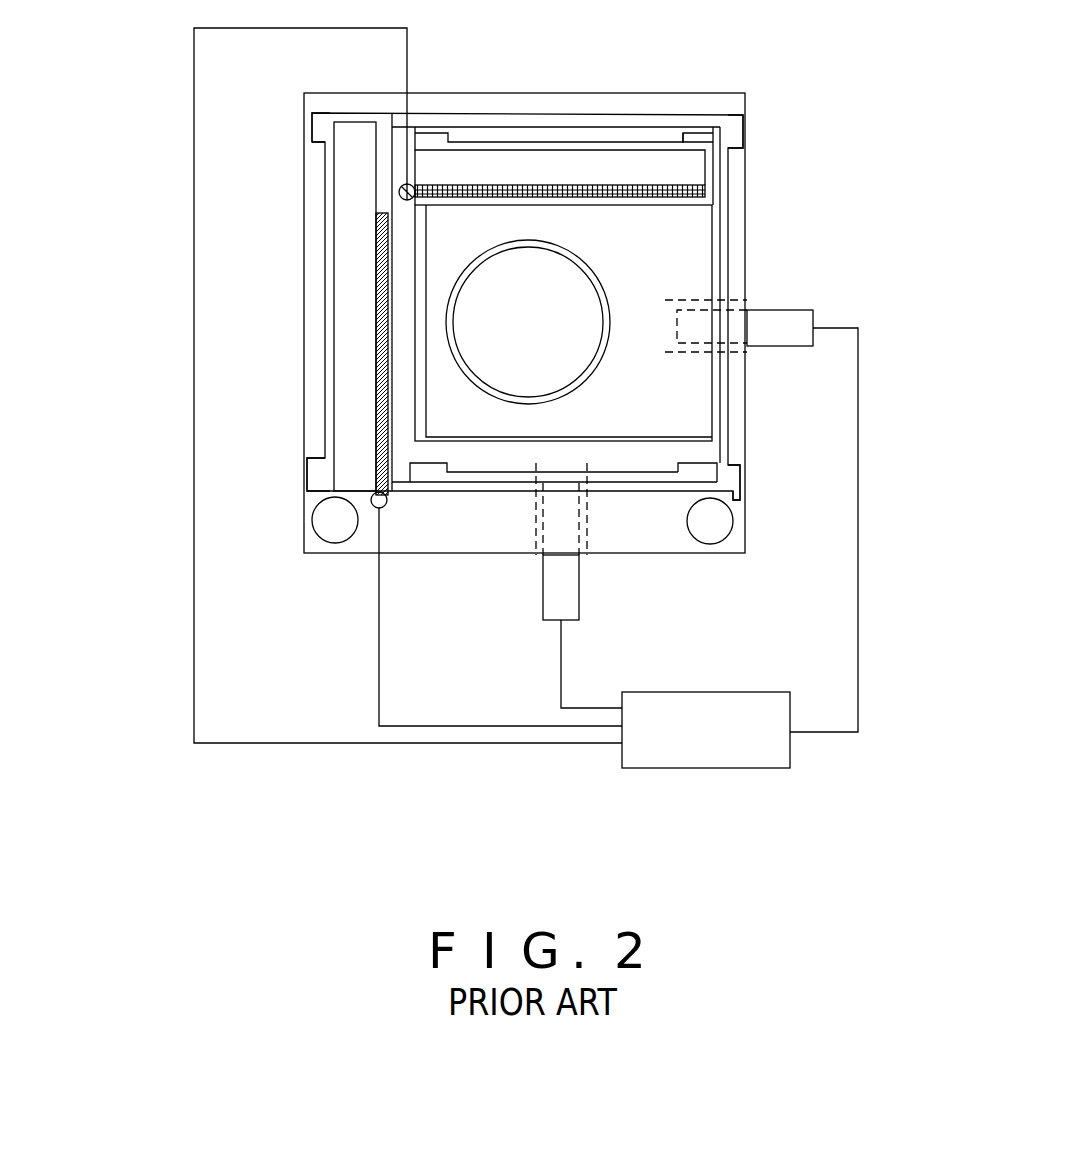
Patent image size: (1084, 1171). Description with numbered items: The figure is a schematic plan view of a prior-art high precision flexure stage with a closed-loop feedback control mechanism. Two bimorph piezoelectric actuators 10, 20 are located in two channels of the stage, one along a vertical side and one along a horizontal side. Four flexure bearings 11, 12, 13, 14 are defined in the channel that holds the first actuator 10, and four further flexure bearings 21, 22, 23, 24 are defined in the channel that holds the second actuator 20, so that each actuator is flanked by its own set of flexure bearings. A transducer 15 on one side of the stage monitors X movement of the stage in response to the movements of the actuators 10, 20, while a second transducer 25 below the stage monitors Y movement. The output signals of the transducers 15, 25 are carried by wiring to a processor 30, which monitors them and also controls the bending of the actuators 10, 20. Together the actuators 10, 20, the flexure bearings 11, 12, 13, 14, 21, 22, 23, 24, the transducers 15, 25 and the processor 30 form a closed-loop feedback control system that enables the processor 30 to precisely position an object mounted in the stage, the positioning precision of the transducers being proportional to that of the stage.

The bimorph piezoelectric actuator 10 is at (383, 322).
The flexure bearing 11 is at (318, 128).
The flexure bearing 12 is at (315, 484).
The flexure bearing 13 is at (738, 128).
The flexure bearing 14 is at (735, 482).
The transducer 15 is at (767, 317).
The bimorph piezoelectric actuator 20 is at (568, 190).
The flexure bearing 21 is at (430, 470).
The flexure bearing 22 is at (690, 482).
The flexure bearing 23 is at (440, 128).
The flexure bearing 24 is at (700, 145).
The transducer 25 is at (555, 613).
The processor 30 is at (720, 757).